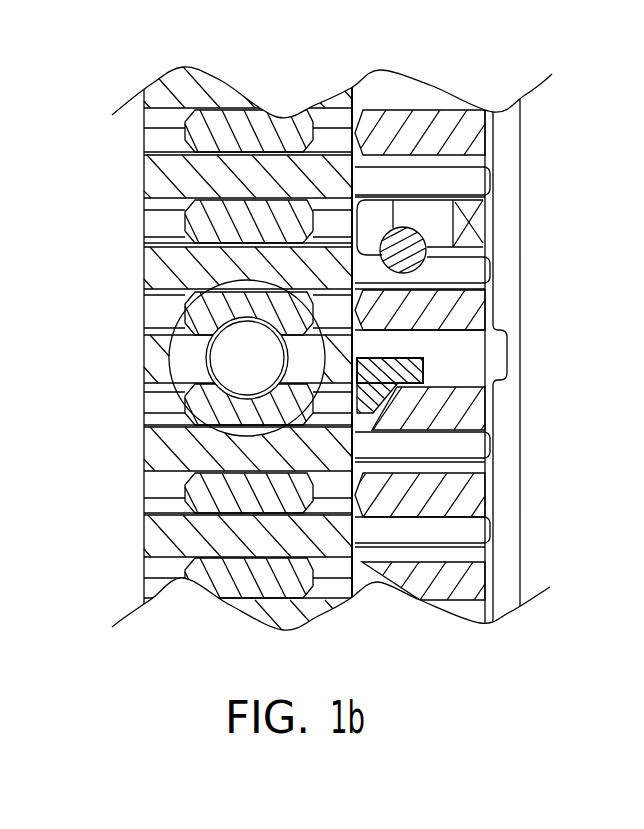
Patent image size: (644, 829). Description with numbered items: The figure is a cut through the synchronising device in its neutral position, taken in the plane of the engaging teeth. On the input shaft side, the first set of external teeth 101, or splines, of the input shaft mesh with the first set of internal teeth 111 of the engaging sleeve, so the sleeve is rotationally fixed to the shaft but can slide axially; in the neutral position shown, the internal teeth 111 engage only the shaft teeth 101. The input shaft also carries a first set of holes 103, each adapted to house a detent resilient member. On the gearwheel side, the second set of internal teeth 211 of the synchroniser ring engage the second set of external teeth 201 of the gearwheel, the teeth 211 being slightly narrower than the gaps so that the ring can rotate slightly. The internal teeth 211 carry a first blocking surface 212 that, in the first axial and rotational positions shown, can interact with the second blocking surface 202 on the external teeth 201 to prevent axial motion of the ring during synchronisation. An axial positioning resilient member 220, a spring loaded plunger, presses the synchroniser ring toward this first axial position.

The first set of external teeth 101 is at (166, 536).
The first set of internal teeth 111 is at (220, 580).
The first set of holes 103 is at (190, 348).
The second set of external teeth 201 is at (473, 587).
The second blocking surface 202 is at (396, 389).
The second set of internal teeth 211 is at (422, 368).
The first blocking surface 212 is at (374, 402).
The axial positioning resilient member 220 is at (410, 258).